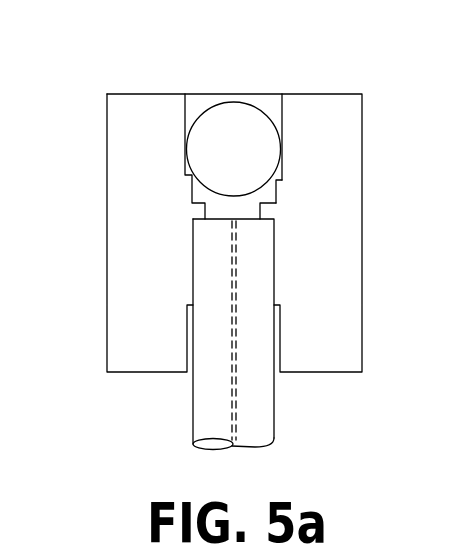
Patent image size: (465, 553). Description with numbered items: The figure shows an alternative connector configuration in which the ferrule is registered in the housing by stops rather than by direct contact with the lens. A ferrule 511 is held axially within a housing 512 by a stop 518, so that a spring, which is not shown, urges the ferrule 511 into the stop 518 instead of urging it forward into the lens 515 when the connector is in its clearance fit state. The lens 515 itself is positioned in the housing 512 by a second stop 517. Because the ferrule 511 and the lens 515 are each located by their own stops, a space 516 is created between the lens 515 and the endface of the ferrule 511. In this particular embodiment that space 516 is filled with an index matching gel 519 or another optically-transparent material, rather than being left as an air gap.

The ferrule 511 is at (205, 385).
The housing 512 is at (118, 238).
The lens 515 is at (226, 113).
The space 516 is at (227, 208).
The second stop 517 is at (283, 170).
The stop 518 is at (267, 213).
The index matching gel 519 is at (263, 198).